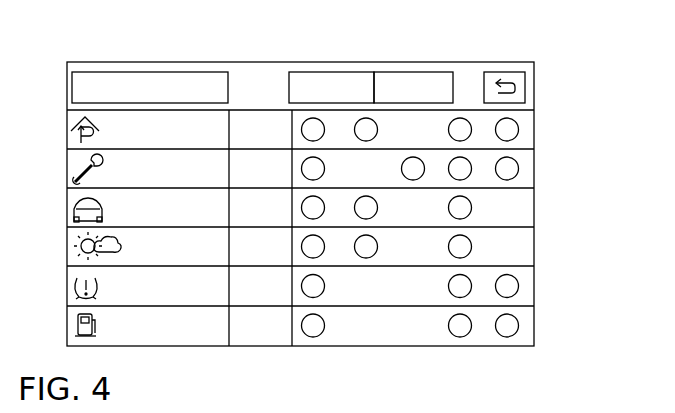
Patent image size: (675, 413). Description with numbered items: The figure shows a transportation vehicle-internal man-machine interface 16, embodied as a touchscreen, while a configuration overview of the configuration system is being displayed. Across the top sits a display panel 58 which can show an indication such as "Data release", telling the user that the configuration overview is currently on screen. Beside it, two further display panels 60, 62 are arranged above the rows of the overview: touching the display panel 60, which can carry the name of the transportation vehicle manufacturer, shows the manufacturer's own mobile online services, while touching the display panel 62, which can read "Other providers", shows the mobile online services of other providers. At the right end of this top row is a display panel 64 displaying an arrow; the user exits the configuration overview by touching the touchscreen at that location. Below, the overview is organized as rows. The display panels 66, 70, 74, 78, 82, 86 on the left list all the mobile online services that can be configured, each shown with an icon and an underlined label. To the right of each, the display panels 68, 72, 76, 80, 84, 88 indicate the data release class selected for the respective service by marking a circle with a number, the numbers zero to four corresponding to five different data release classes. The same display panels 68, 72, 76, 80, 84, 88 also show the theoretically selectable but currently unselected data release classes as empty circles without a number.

The man-machine interface 16 is at (533, 336).
The display panel 58 is at (168, 73).
The display panel 60 is at (338, 73).
The display panel 62 is at (413, 73).
The display panel 64 is at (512, 75).
The display panel 66 is at (165, 141).
The display panel 68 is at (525, 129).
The display panel 70 is at (165, 180).
The display panel 72 is at (525, 168).
The display panel 74 is at (165, 219).
The display panel 76 is at (525, 207).
The display panel 78 is at (165, 258).
The display panel 80 is at (525, 245).
The display panel 82 is at (165, 297).
The display panel 84 is at (525, 285).
The display panel 86 is at (165, 336).
The display panel 88 is at (525, 323).